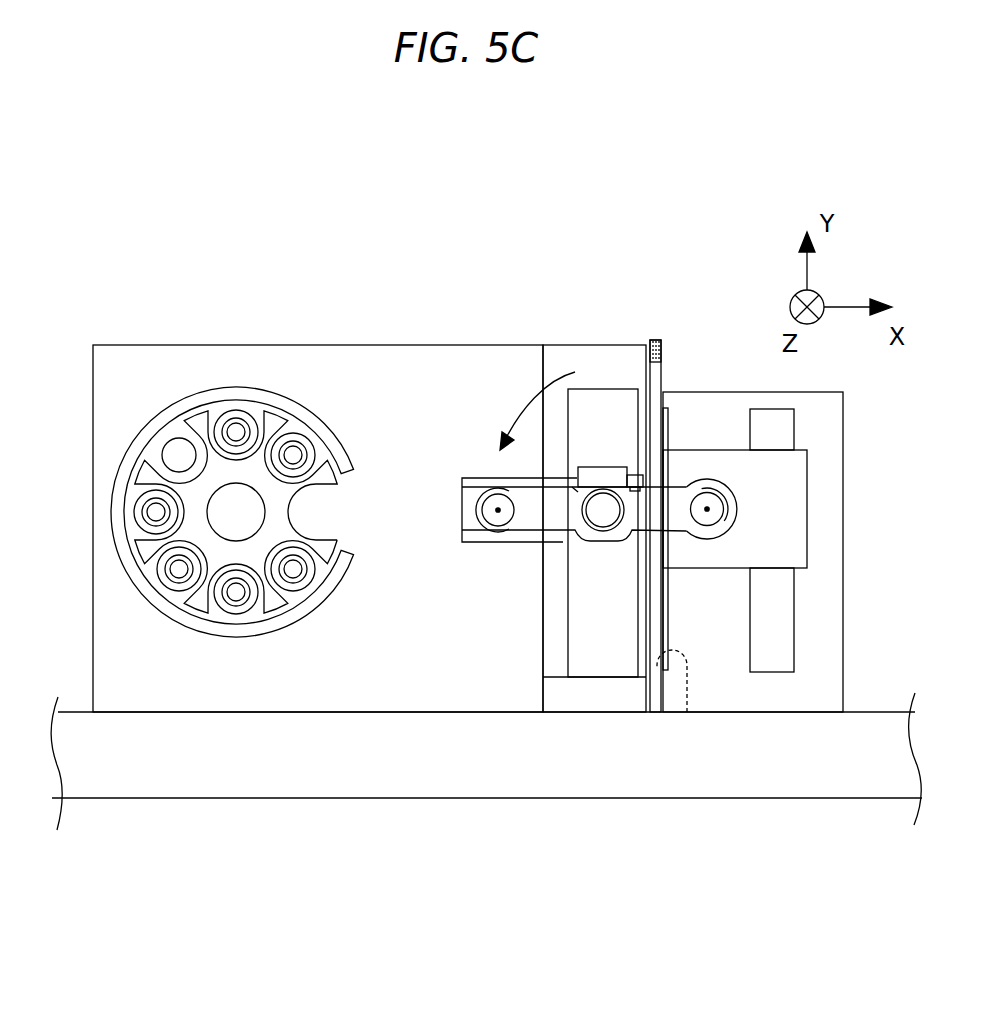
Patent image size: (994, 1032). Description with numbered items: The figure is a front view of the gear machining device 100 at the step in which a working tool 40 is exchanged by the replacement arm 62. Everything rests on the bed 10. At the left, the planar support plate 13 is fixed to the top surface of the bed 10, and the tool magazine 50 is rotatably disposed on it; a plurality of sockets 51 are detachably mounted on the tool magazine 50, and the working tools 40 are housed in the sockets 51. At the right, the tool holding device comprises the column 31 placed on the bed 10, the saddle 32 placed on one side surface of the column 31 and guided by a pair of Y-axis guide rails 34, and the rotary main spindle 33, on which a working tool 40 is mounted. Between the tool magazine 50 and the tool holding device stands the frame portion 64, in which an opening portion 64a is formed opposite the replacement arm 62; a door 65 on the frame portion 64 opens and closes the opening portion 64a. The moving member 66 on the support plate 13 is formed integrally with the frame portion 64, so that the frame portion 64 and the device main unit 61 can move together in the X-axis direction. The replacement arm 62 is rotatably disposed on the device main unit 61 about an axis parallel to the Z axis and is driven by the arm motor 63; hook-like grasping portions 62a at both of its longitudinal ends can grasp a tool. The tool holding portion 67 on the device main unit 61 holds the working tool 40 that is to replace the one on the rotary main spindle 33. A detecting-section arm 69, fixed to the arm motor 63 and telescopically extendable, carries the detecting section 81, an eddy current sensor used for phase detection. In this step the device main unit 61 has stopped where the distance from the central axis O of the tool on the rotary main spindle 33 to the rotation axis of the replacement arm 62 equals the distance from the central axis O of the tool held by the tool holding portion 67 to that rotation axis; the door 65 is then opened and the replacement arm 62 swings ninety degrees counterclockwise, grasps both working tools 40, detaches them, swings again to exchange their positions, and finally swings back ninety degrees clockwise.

The gear machining device 100 is at (142, 278).
The bed 10 is at (857, 735).
The support plate 13 is at (93, 648).
The column 31 is at (828, 398).
The saddle 32 is at (787, 540).
The rotary main spindle 33 is at (718, 483).
The Y-axis guide rails 34 is at (773, 424).
The working tool 40 is at (297, 452).
The tool magazine 50 is at (145, 477).
The socket 51 is at (163, 437).
The device main unit 61 is at (592, 402).
The replacement arm 62 is at (623, 466).
The grasping portion 62a is at (477, 518).
The arm motor 63 is at (600, 515).
The frame portion 64 is at (665, 350).
The opening portion 64a is at (687, 712).
The door 65 is at (656, 340).
The moving member 66 is at (560, 350).
The tool holding portion 67 is at (473, 540).
The detecting-section arm 69 is at (574, 490).
The detecting section 81 is at (627, 490).
The central axis O is at (498, 510).